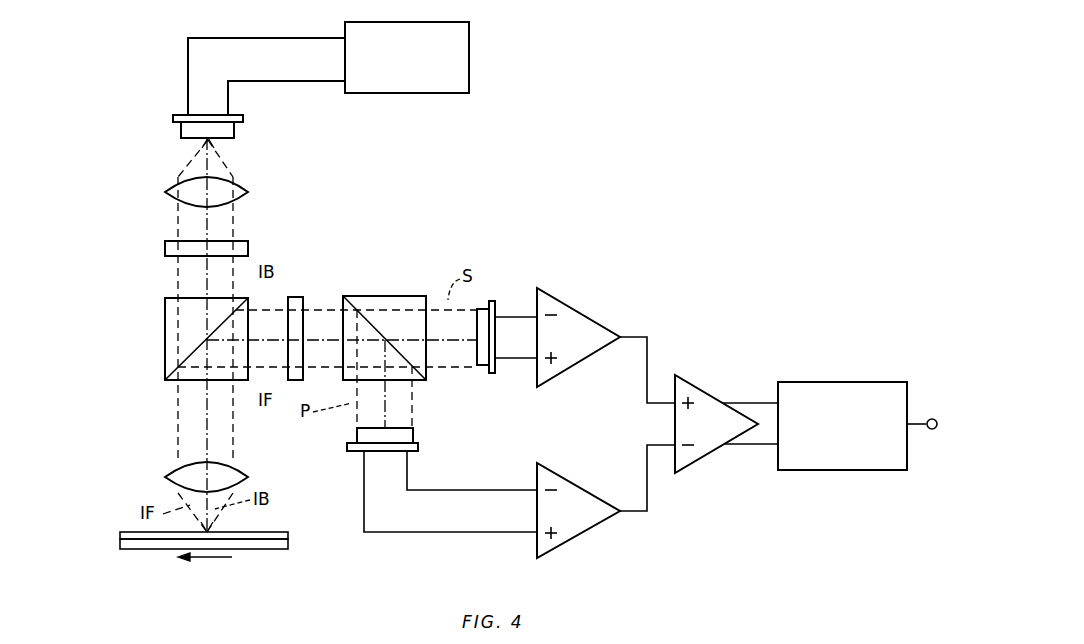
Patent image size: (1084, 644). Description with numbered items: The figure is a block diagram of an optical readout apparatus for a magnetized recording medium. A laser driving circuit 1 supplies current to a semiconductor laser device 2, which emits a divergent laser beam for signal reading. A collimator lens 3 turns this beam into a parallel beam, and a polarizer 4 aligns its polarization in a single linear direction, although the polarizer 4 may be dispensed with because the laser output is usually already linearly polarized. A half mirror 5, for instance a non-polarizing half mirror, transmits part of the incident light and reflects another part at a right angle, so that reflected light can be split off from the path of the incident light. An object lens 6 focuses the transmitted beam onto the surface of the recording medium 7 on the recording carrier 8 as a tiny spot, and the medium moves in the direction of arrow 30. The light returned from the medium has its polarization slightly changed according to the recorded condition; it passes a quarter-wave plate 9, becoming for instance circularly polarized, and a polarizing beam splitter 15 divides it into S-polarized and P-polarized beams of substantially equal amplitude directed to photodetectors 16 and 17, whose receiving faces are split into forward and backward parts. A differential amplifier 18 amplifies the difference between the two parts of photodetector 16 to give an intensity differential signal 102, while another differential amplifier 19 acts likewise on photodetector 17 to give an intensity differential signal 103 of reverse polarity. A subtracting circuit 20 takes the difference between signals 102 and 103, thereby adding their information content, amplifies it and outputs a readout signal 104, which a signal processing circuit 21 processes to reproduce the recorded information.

The laser driving circuit 1 is at (469, 57).
The semiconductor laser device 2 is at (178, 130).
The collimator lens 3 is at (165, 190).
The polarizer 4 is at (165, 250).
The half mirror 5 is at (165, 333).
The object lens 6 is at (165, 478).
The recording medium 7 is at (272, 532).
The recording carrier 8 is at (288, 544).
The quarter-wave plate 9 is at (290, 295).
The polarizing beam splitter 15 is at (390, 295).
The photodetector 16 is at (487, 300).
The photodetector 17 is at (418, 437).
The differential amplifier 18 is at (580, 310).
The differential amplifier 19 is at (575, 478).
The subtracting circuit 20 is at (700, 462).
The signal processing circuit 21 is at (848, 470).
The arrow 30 is at (205, 568).
The intensity differential signal 102 is at (650, 344).
The intensity differential signal 103 is at (645, 514).
The readout signal 104 is at (750, 401).